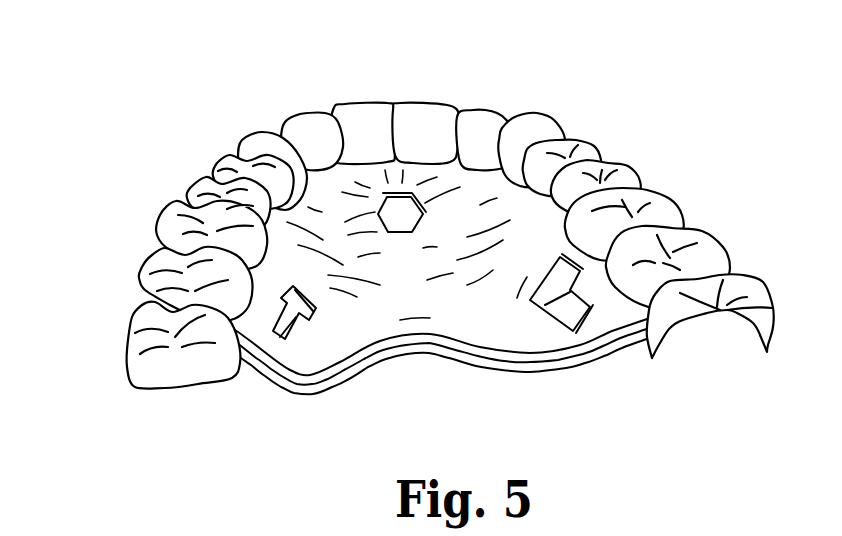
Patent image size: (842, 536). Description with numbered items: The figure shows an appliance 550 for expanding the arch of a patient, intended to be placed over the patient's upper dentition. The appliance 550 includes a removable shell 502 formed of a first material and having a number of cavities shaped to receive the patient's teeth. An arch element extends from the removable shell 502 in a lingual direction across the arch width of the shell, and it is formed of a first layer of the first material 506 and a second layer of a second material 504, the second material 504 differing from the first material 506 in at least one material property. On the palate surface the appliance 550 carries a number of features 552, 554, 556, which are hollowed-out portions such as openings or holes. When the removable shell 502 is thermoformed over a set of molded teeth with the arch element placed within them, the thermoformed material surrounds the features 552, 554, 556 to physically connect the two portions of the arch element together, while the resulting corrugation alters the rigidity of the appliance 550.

The appliance 550 is at (268, 72).
The removable shell 502 is at (163, 262).
The second material 504 is at (318, 350).
The first material 506 is at (445, 357).
The feature 552 is at (316, 316).
The feature 554 is at (423, 218).
The feature 556 is at (545, 310).